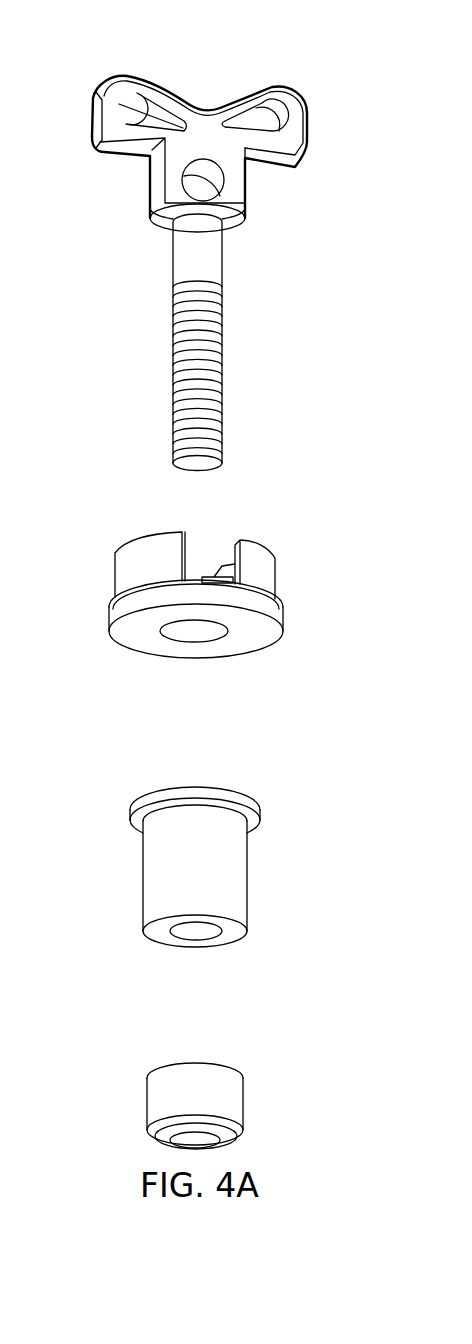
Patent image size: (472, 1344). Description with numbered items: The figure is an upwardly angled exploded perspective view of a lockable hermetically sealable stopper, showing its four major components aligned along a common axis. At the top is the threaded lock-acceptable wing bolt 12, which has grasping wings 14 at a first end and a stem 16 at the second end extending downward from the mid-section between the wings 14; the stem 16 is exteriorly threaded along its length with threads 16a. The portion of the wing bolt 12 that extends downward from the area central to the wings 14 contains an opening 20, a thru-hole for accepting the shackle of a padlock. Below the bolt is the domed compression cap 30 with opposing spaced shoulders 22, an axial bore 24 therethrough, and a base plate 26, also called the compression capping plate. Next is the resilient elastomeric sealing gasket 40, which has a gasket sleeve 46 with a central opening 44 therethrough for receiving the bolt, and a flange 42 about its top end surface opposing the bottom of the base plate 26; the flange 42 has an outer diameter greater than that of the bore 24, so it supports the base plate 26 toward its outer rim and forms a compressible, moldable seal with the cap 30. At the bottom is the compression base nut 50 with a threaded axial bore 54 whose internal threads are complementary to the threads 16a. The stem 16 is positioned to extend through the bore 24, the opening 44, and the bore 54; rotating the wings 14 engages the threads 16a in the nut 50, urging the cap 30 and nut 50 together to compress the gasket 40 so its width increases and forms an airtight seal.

The threaded wing bolt 12 is at (251, 248).
The wings 14 is at (270, 92).
The stem section 16 is at (251, 342).
The threads 16a is at (216, 328).
The opening 20 is at (212, 182).
The shoulder 22 is at (268, 543).
The axial bore 24 is at (185, 635).
The base plate 26 is at (108, 612).
The domed compression cap 30 is at (218, 623).
The sealing gasket 40 is at (216, 869).
The flange 42 is at (237, 792).
The opening 44 is at (187, 932).
The sleeve 46 is at (143, 855).
The compression base nut 50 is at (264, 1133).
The threaded axial bore 54 is at (207, 1138).